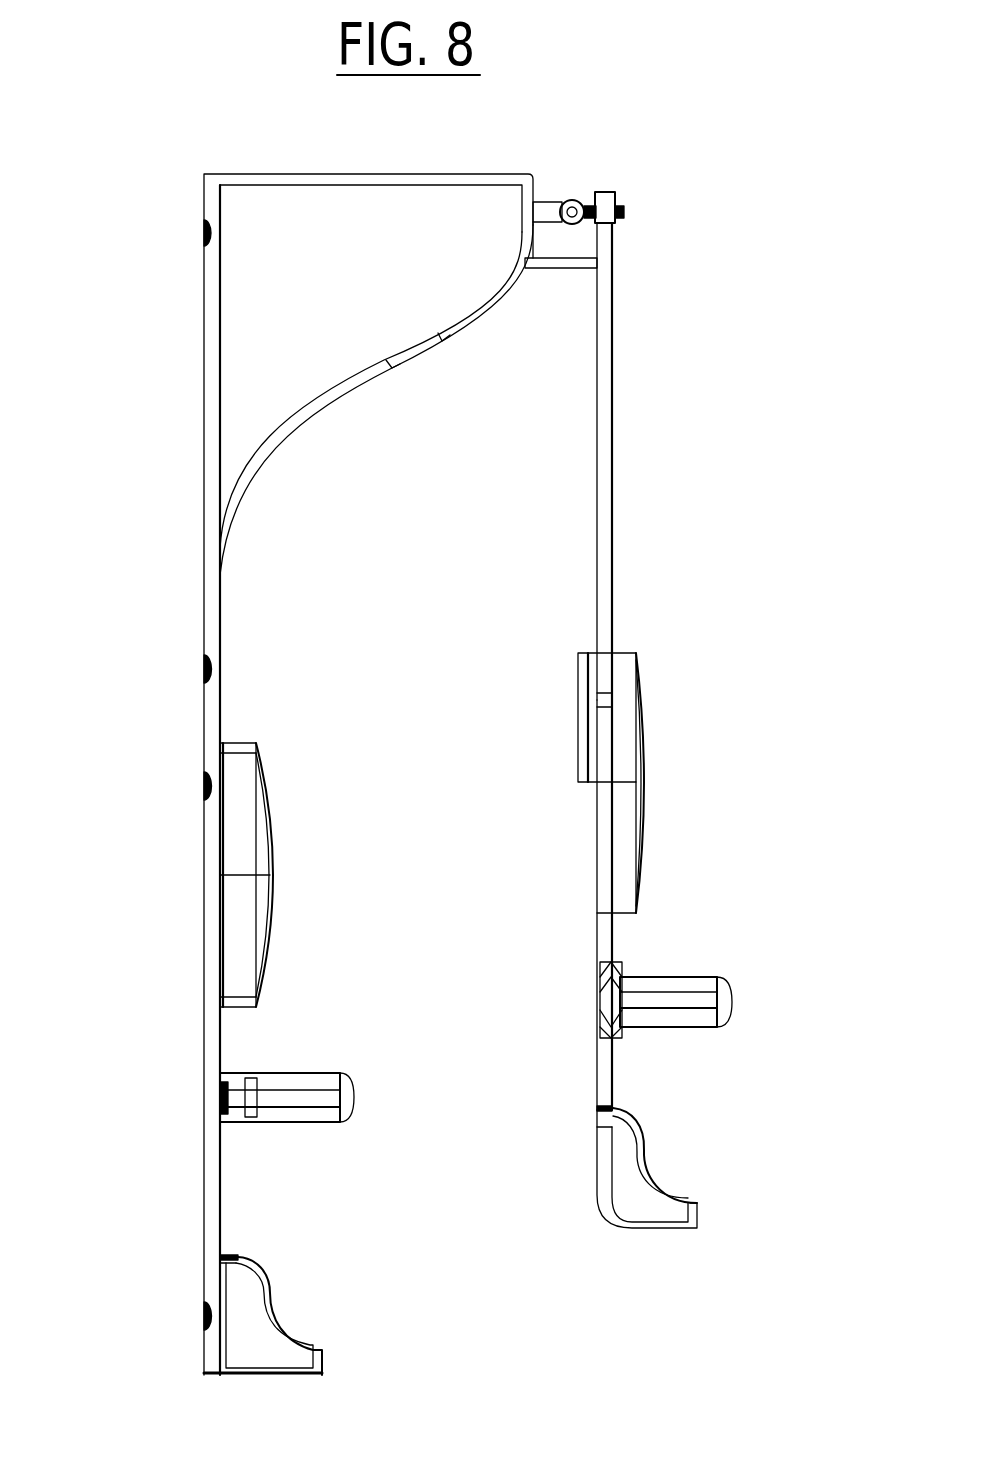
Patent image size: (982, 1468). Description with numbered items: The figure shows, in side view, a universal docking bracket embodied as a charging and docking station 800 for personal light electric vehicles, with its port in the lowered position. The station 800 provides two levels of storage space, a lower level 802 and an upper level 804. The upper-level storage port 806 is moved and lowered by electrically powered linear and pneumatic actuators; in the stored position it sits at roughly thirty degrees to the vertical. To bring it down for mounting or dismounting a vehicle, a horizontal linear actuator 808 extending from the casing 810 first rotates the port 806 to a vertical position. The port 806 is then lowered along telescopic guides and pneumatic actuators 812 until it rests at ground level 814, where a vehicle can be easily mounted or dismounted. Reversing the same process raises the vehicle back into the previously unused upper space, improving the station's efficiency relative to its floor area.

The charging and docking station 800 is at (255, 329).
The lower level 802 is at (327, 1085).
The upper level 804 is at (700, 983).
The upper-level storage port 806 is at (603, 938).
The horizontal linear actuator 808 is at (556, 262).
The casing 810 is at (322, 245).
The telescopic guides and pneumatic actuators 812 is at (605, 487).
The ground level 814 is at (600, 1072).